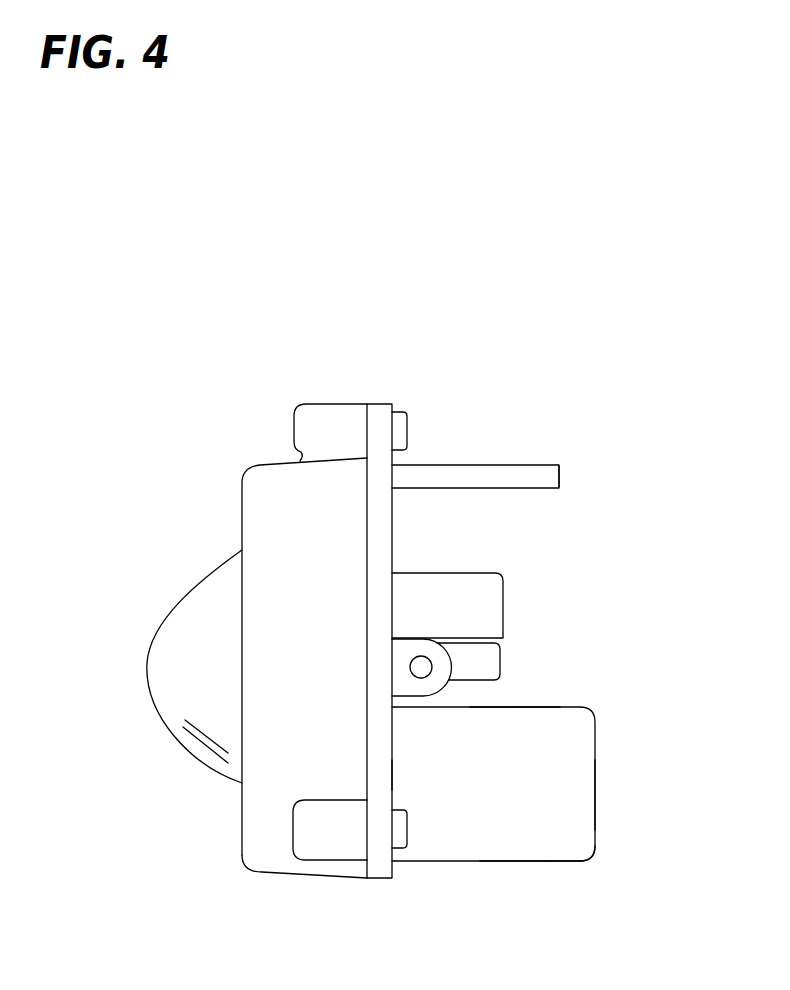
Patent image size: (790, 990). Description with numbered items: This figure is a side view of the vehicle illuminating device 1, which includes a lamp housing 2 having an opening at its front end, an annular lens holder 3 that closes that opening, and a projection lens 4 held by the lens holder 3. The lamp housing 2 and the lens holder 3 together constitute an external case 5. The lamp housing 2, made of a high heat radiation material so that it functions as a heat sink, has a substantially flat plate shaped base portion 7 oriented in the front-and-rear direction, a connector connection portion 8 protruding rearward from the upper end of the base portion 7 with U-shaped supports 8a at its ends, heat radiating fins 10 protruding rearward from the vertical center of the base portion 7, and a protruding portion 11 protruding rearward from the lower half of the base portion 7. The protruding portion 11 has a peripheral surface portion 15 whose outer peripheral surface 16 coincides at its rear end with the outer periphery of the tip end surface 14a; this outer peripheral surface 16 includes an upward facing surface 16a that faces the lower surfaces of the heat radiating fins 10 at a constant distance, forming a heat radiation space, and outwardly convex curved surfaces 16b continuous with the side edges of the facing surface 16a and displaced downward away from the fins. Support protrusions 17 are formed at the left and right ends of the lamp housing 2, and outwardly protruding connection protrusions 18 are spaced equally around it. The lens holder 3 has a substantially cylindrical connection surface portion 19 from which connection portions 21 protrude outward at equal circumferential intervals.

The vehicle illuminating device 1 is at (615, 308).
The lamp housing 2 is at (387, 478).
The lens holder 3 is at (262, 462).
The projection lens 4 is at (212, 590).
The external case 5 is at (405, 248).
The base portion 7 is at (387, 770).
The connector connection portion 8 is at (478, 470).
The support 8a is at (522, 470).
The heat radiating fin 10 is at (495, 605).
The protruding portion 11 is at (587, 778).
The tip end surface 14a is at (595, 815).
The peripheral surface portion 15 is at (557, 852).
The outer peripheral surface 16 is at (537, 863).
The facing surface 16a is at (497, 707).
The curved surface 16b is at (530, 712).
The support protrusion 17 is at (445, 690).
The connection protrusion 18 is at (395, 412).
The connection surface portion 19 is at (275, 843).
The connection portion 21 is at (325, 409).